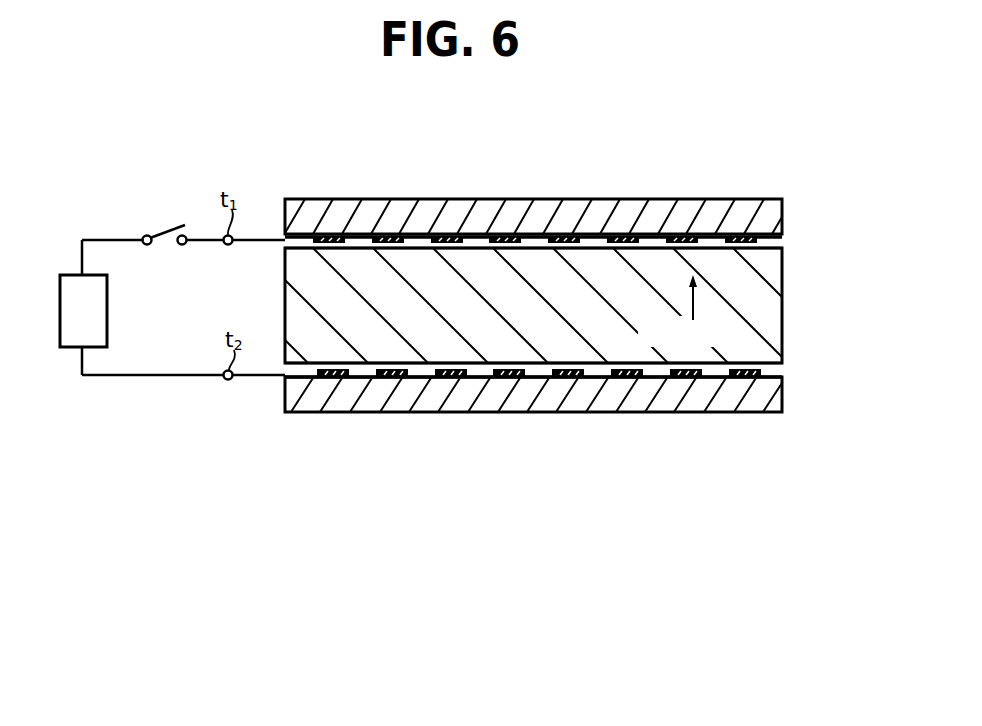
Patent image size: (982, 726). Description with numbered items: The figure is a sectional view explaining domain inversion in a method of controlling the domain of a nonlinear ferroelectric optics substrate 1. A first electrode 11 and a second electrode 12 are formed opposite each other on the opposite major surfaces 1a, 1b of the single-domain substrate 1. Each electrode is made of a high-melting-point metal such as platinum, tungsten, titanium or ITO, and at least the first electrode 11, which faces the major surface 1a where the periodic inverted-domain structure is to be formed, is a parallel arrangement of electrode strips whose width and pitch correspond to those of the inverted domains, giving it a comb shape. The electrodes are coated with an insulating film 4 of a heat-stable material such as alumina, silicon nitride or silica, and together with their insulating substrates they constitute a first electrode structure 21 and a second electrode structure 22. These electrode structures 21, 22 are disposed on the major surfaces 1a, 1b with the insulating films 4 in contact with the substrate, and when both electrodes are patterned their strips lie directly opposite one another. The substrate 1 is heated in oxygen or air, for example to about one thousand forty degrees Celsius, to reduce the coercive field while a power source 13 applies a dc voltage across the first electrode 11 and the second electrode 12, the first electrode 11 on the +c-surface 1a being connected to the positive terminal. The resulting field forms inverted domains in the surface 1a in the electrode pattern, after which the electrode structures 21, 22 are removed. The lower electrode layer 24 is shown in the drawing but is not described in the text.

The nonlinear ferroelectric optics substrate 1 is at (781, 315).
The major surface 1a is at (784, 238).
The major surface 1b is at (784, 371).
The insulating film 4 is at (362, 242).
The first electrode 11 is at (580, 242).
The second electrode 12 is at (687, 378).
The power source 13 is at (107, 322).
The first electrode structure 21 is at (775, 212).
The second electrode structure 22 is at (528, 396).
The lower electrode 24 is at (362, 379).